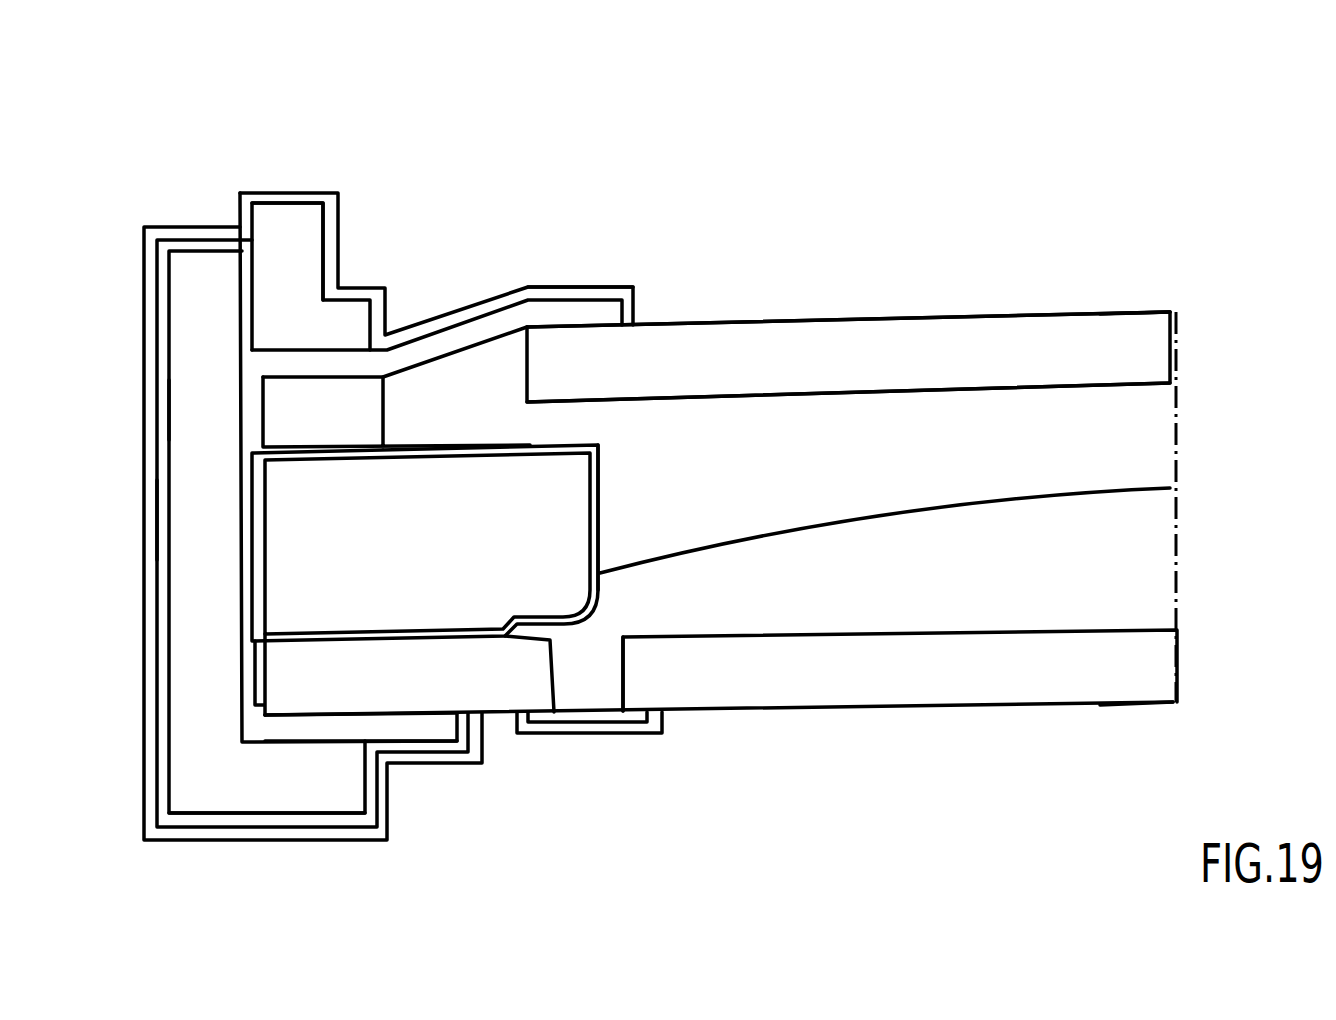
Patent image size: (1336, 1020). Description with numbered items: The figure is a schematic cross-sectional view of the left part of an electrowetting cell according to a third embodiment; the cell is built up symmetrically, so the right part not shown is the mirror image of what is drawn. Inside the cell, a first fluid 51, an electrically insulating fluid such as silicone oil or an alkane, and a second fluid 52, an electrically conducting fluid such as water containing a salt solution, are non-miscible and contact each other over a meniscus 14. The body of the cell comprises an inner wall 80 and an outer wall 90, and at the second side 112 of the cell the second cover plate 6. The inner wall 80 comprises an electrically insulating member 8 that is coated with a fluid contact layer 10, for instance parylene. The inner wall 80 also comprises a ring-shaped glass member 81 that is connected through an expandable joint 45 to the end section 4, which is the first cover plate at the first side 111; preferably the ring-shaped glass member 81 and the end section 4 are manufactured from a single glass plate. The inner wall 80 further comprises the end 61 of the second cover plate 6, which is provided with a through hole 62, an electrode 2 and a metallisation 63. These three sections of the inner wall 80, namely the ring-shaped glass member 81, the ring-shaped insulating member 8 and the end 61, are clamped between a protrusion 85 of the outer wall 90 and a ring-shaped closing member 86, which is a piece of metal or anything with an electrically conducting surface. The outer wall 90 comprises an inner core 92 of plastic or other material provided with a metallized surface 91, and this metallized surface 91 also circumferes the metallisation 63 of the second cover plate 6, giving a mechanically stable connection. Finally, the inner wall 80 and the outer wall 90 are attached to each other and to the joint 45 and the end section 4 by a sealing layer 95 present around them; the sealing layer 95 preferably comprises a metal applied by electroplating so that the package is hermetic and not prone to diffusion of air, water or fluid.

The electrode 2 is at (597, 727).
The end section 4 is at (822, 345).
The second cover plate 6 is at (870, 675).
The electrically insulating member 8 is at (333, 556).
The fluid contact layer 10 is at (600, 470).
The meniscus 14 is at (1130, 488).
The expandable joint 45 is at (488, 332).
The first fluid 51 is at (882, 445).
The second fluid 52 is at (962, 535).
The end of the second cover plate 61 is at (457, 687).
The through hole 62 is at (607, 677).
The metallisation 63 is at (405, 722).
The inner wall 80 is at (362, 111).
The ring-shaped glass member 81 is at (358, 408).
The protrusion 85 is at (310, 783).
The closing member 86 is at (300, 232).
The outer wall 90 is at (135, 113).
The metallized surface 91 is at (167, 510).
The inner core 92 is at (197, 405).
The sealing layer 95 is at (551, 293).
The first side 111 is at (1120, 312).
The second side 112 is at (1100, 705).